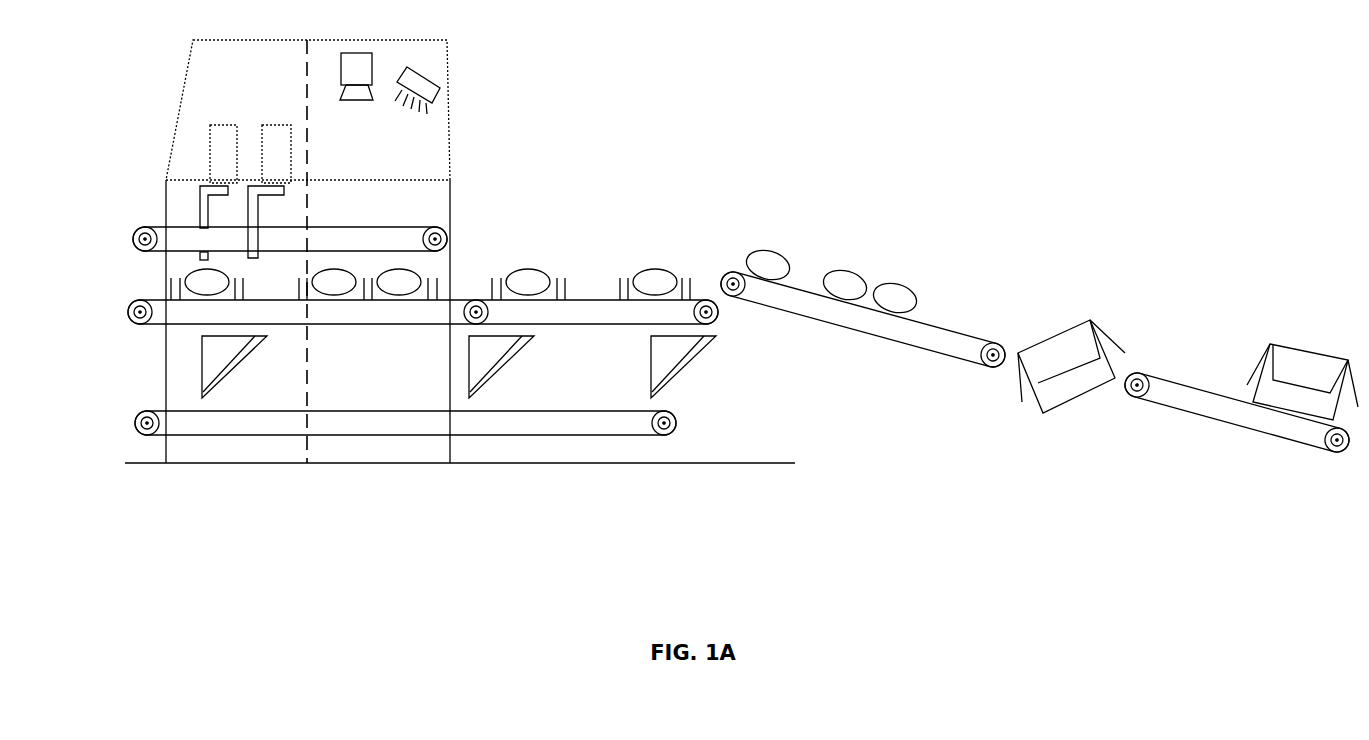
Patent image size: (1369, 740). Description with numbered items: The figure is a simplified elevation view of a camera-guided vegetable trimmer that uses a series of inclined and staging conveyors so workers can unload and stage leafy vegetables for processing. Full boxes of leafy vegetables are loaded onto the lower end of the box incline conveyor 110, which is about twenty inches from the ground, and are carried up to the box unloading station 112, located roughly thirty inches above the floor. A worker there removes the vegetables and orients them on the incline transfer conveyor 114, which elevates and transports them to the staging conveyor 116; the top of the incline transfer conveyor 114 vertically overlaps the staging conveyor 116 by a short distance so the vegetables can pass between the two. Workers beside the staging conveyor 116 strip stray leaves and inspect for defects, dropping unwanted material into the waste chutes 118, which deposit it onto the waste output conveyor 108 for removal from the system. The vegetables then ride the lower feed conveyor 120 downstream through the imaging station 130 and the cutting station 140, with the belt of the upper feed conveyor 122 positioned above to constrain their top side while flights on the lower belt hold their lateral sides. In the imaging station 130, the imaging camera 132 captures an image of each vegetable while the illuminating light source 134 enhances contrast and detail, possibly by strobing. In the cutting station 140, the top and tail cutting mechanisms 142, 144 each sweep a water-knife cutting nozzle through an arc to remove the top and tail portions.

The waste output conveyor 108 is at (540, 435).
The box incline conveyor 110 is at (1158, 377).
The box unloading station 112 is at (1075, 322).
The incline transfer conveyor 114 is at (927, 320).
The staging conveyor 116 is at (717, 325).
The waste chutes 118 is at (673, 380).
The lower feed conveyor 120 is at (145, 330).
The upper feed conveyor 122 is at (435, 227).
The imaging station 130 is at (400, 158).
The imaging camera 132 is at (352, 53).
The illuminating light source 134 is at (420, 73).
The cutting station 140 is at (272, 76).
The top cutting mechanism 142 is at (263, 122).
The tail cutting mechanism 144 is at (208, 122).